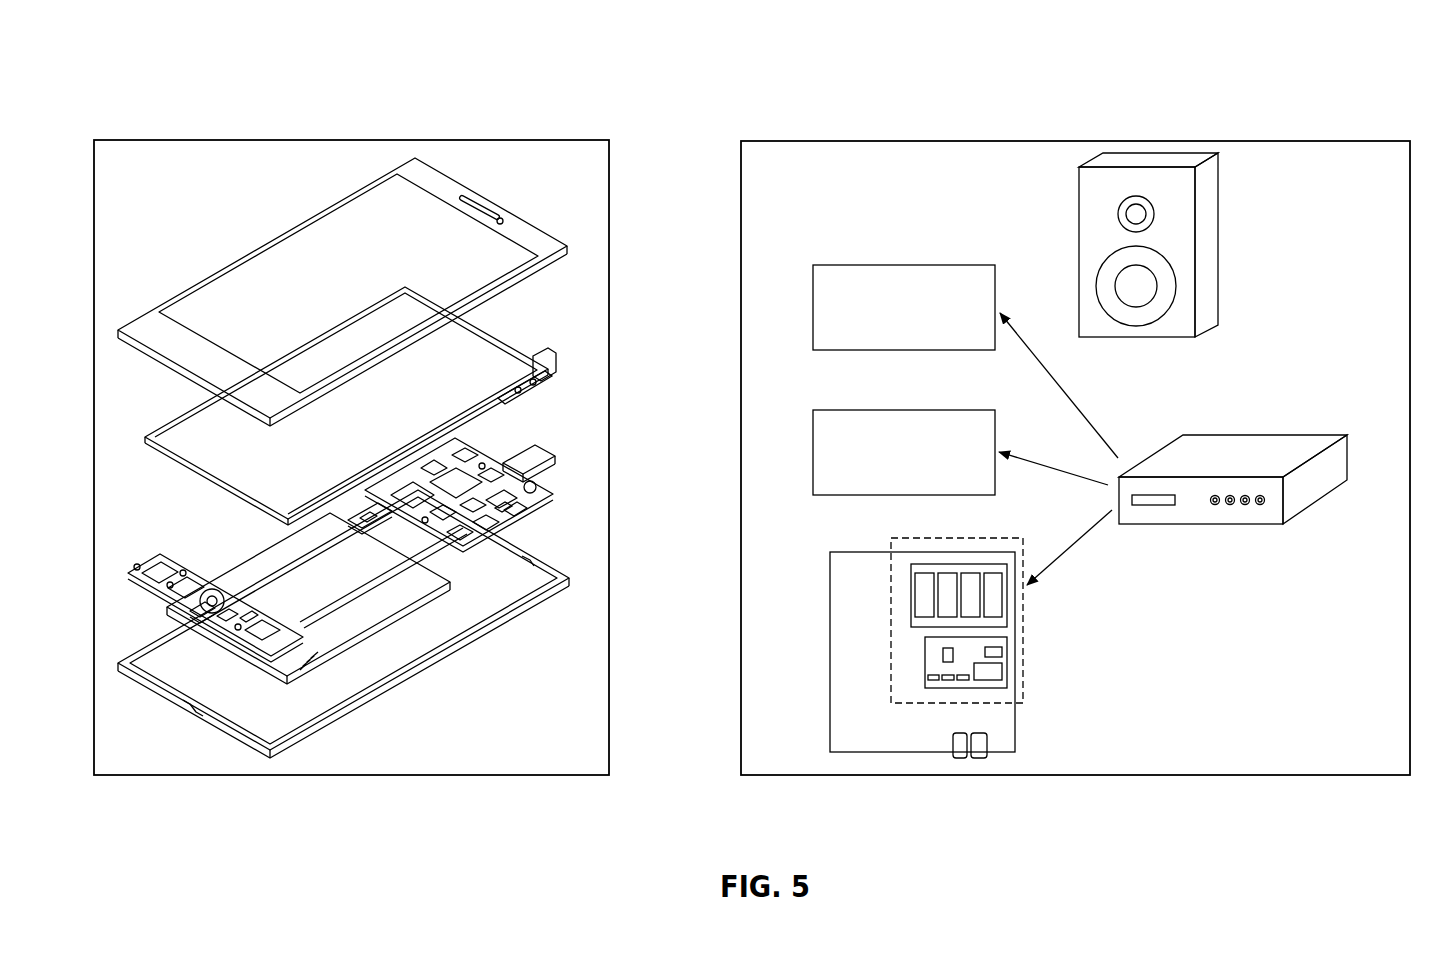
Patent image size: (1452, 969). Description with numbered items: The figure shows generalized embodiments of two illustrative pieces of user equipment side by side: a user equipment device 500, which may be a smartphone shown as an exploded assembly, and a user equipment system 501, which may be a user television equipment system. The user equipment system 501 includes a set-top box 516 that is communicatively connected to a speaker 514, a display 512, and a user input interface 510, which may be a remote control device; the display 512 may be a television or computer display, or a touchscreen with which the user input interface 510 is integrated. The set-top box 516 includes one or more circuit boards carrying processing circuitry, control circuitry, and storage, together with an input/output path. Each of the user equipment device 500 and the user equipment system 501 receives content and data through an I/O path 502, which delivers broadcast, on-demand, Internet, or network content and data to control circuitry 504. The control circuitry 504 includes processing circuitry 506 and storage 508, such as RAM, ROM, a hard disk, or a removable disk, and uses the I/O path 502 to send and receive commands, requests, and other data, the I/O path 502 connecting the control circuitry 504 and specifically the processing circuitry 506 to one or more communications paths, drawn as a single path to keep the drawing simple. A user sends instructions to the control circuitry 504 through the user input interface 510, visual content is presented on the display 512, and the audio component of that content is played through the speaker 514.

The user equipment device 500 is at (204, 87).
The user equipment system 501 is at (1283, 97).
The I/O path 502 is at (203, 612).
The control circuitry 504 is at (888, 670).
The processing circuitry 506 is at (918, 645).
The storage 508 is at (908, 592).
The user input interface 510 is at (463, 348).
The display 512 is at (811, 447).
The speaker 514 is at (1075, 250).
The set-top box 516 is at (1237, 432).